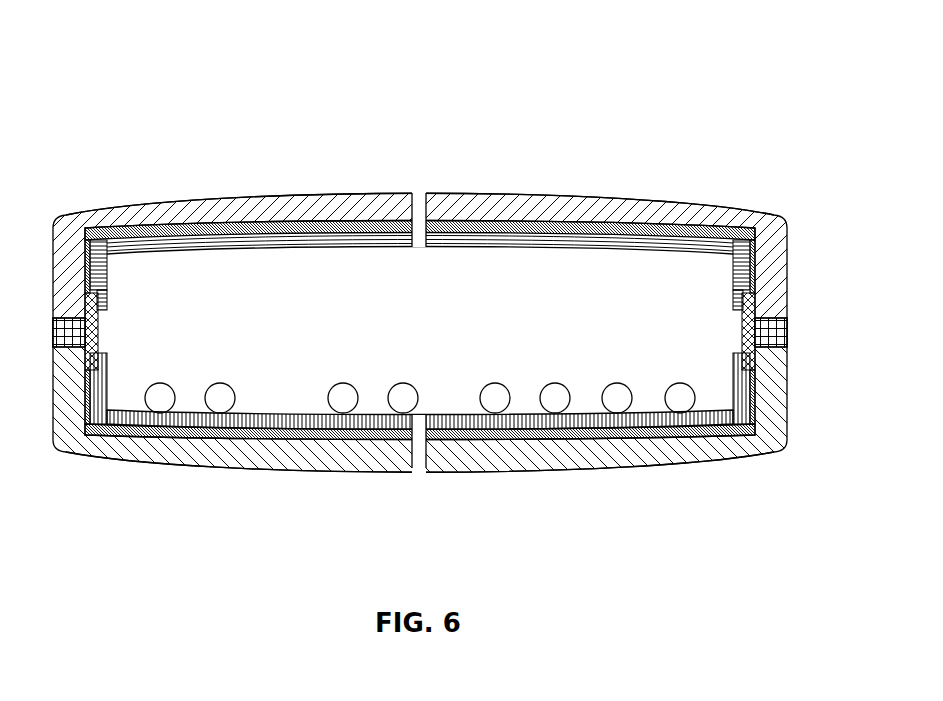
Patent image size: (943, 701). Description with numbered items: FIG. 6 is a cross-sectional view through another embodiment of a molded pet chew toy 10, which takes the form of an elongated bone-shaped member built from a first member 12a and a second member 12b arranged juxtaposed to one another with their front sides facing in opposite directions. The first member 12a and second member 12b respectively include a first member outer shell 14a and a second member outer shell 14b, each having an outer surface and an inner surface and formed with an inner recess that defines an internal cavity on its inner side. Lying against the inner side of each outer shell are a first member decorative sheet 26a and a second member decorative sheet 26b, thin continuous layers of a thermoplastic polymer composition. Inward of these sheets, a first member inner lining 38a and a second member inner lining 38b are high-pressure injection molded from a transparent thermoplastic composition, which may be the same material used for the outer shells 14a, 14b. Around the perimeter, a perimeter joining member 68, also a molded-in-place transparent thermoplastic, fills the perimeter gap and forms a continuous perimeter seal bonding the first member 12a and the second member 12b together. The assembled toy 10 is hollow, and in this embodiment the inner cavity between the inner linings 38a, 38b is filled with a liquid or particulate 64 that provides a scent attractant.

The molded pet chew toy 10 is at (165, 78).
The first member 12a is at (525, 118).
The second member 12b is at (312, 512).
The first member outer shell 14a is at (307, 200).
The second member outer shell 14b is at (263, 455).
The first member decorative sheet 26a is at (598, 227).
The second member decorative sheet 26b is at (555, 440).
The first member inner lining 38a is at (518, 238).
The second member inner lining 38b is at (325, 405).
The liquid or particulate 64 is at (493, 396).
The perimeter joining member 68 is at (418, 195).